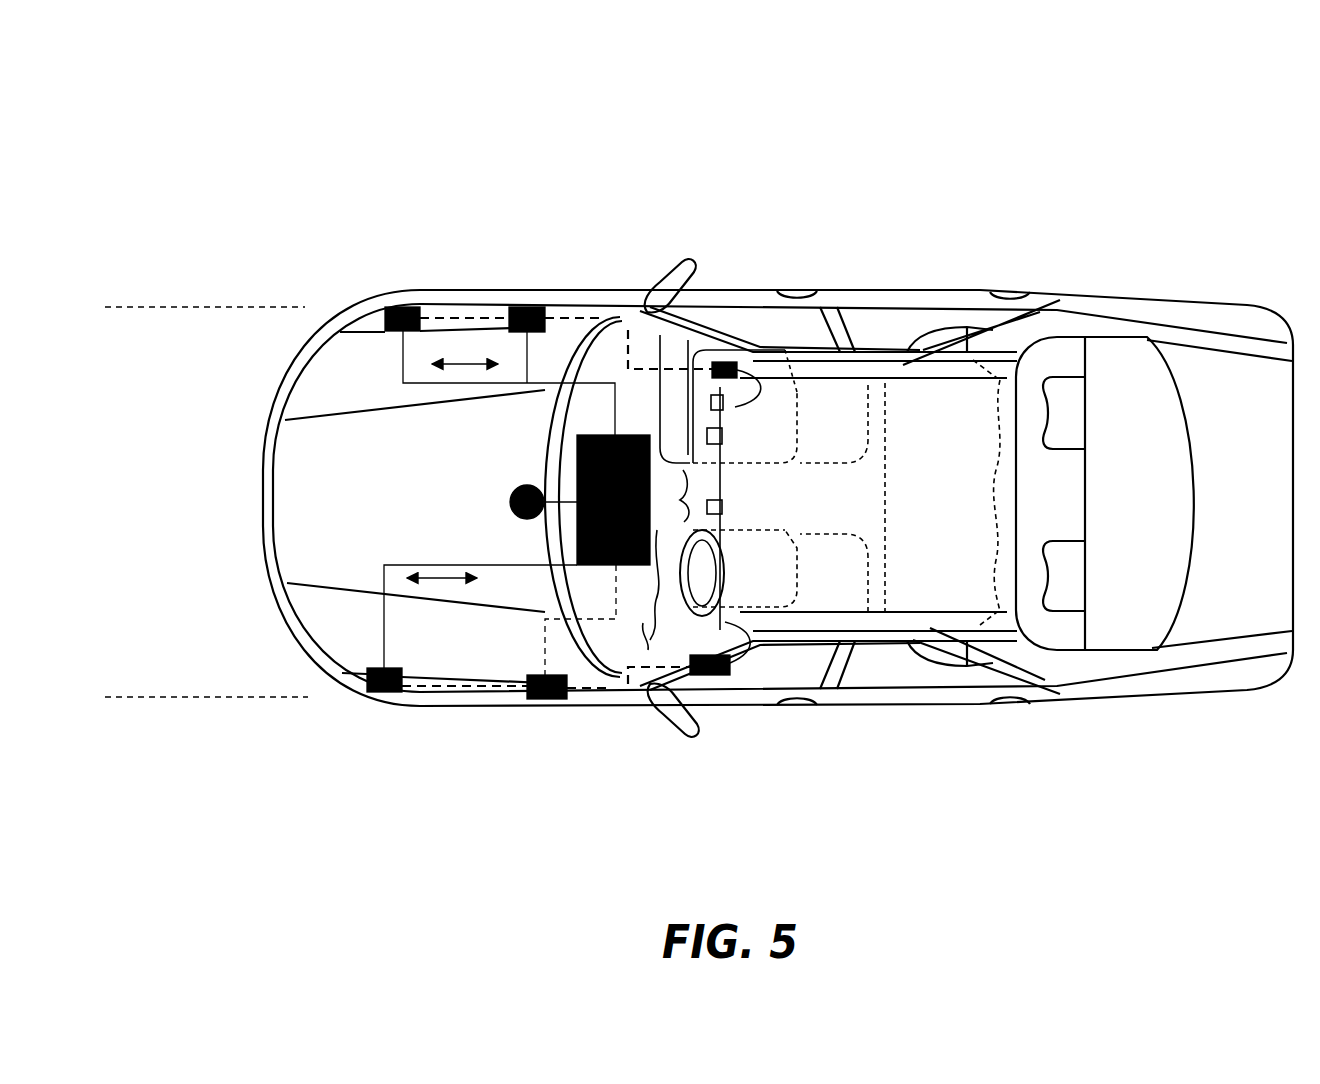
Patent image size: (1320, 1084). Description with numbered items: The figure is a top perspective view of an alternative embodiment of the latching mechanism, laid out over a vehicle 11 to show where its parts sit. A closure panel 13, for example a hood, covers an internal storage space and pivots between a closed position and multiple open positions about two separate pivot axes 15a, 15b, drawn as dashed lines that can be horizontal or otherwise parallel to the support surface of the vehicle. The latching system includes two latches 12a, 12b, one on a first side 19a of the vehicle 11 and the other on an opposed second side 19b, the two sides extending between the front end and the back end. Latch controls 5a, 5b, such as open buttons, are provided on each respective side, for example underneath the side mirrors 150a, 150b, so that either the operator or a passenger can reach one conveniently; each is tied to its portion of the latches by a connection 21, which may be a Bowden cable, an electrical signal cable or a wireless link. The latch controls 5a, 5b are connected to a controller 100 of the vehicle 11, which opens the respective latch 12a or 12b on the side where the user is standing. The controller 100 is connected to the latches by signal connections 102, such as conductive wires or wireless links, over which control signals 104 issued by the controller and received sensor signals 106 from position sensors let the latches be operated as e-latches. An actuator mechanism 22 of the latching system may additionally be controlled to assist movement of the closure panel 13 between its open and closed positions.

The vehicle 11 is at (1067, 275).
The latch 12a is at (525, 305).
The latch 12b is at (543, 700).
The closure panel 13 is at (396, 518).
The pivot axis 15a is at (222, 305).
The pivot axis 15b is at (239, 699).
The first side 19a is at (748, 178).
The second side 19b is at (623, 767).
The connection 21 is at (585, 300).
The actuator mechanism 22 is at (490, 497).
The controller 100 is at (610, 433).
The signal connections 102 is at (485, 560).
The control signals 104 is at (432, 362).
The sensor signals 106 is at (415, 578).
The side mirror 150a is at (702, 262).
The side mirror 150b is at (690, 738).
The latch control 5a is at (735, 362).
The latch control 5b is at (732, 672).